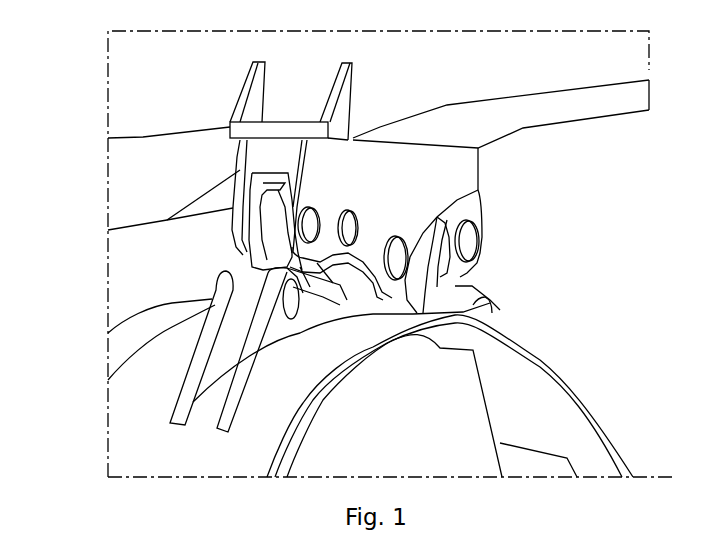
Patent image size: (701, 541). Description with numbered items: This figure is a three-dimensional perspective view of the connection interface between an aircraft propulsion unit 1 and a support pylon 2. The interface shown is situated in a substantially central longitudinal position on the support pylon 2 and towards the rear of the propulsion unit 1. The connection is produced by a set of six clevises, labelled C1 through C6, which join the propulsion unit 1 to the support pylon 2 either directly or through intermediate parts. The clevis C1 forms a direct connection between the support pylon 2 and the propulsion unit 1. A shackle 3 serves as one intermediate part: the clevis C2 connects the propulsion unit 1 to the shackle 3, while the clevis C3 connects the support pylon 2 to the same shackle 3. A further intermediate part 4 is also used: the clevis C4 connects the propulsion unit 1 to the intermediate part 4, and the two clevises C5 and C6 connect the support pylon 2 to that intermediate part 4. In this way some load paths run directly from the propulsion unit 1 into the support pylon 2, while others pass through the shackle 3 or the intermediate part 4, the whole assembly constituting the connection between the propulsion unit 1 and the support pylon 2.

The aircraft propulsion unit 1 is at (560, 420).
The support pylon 2 is at (593, 105).
The shackle 3 is at (460, 277).
The intermediate part 4 is at (262, 258).
The clevis connection C1 is at (397, 253).
The clevis connection C2 is at (490, 305).
The clevis connection C3 is at (467, 240).
The clevis connection C4 is at (288, 322).
The clevis connection C5 is at (300, 237).
The clevis connection C6 is at (343, 225).